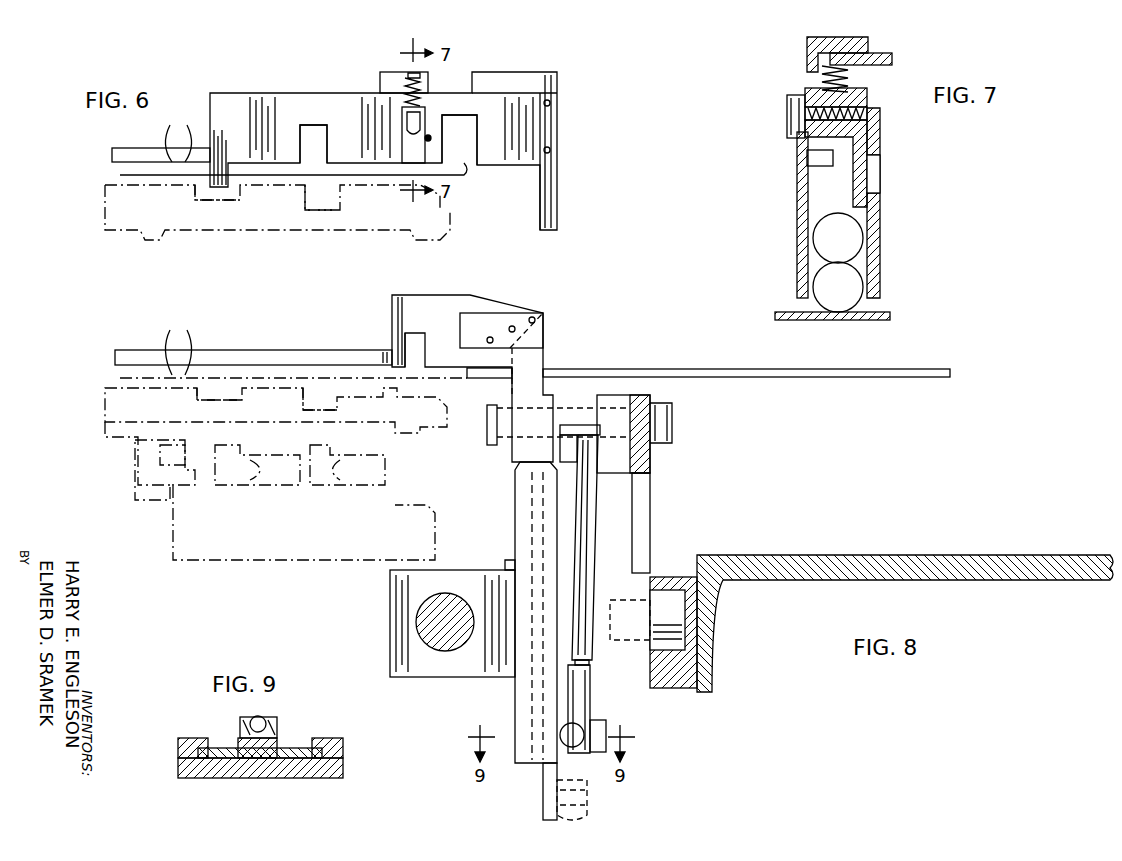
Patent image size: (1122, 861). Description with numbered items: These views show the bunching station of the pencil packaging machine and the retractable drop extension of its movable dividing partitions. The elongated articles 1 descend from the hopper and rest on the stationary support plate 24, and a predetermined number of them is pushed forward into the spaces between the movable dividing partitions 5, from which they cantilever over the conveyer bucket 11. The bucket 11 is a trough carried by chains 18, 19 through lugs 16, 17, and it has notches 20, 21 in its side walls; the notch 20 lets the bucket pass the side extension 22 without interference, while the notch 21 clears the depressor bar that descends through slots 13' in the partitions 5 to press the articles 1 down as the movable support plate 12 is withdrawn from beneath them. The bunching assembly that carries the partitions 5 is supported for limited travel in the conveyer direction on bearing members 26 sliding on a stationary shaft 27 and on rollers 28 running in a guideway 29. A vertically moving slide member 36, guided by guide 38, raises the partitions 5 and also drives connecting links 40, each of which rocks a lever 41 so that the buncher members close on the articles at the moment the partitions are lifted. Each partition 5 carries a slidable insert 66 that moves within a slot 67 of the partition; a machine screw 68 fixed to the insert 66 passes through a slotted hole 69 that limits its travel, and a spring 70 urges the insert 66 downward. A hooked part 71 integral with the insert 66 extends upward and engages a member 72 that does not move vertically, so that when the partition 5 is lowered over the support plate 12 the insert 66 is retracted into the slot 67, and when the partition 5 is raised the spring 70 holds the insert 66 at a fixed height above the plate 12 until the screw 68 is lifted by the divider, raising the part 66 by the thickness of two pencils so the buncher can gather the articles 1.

In FIG. 6, the elongated articles 1 is at (178, 134).
In FIG. 7, the elongated articles 1 is at (837, 302).
In FIG. 8, the elongated articles 1 is at (178, 344).
In FIG. 6, the movable dividing partitions 5 is at (281, 93).
In FIG. 7, the movable dividing partitions 5 is at (870, 146).
In FIG. 6, the conveyer bucket 11 is at (277, 233).
In FIG. 8, the conveyer bucket 11 is at (255, 474).
In FIG. 7, the movable support plate 12 is at (880, 312).
In FIG. 6, the slots 13' is at (293, 134).
In FIG. 8, the lug 16 is at (135, 490).
In FIG. 8, the lug 17 is at (400, 485).
In FIG. 8, the chain 18 is at (170, 490).
In FIG. 8, the chain 19 is at (360, 462).
In FIG. 6, the notch 20 is at (195, 196).
In FIG. 8, the notch 20 is at (197, 392).
In FIG. 6, the notch 21 is at (302, 199).
In FIG. 8, the notch 21 is at (340, 398).
In FIG. 6, the side extension 22 is at (224, 152).
In FIG. 8, the stationary support plate 24 is at (738, 378).
In FIG. 8, the bearing members 26 is at (400, 611).
In FIG. 8, the stationary shaft 27 is at (422, 634).
In FIG. 8, the rollers 28 is at (658, 628).
In FIG. 8, the guideway 29 is at (670, 682).
In FIG. 8, the slide member 36 is at (548, 776).
In FIG. 9, the slide member 36 is at (300, 765).
In FIG. 8, the guide 38 is at (525, 715).
In FIG. 9, the guide 38 is at (180, 748).
In FIG. 8, the connecting links 40 is at (597, 568).
In FIG. 9, the connecting links 40 is at (278, 722).
In FIG. 8, the lever 41 is at (632, 405).
In FIG. 6, the slidable insert 66 is at (402, 149).
In FIG. 7, the slidable insert 66 is at (880, 258).
In FIG. 6, the slot 67 is at (429, 134).
In FIG. 7, the slot 67 is at (874, 180).
In FIG. 7, the machine screw 68 is at (790, 125).
In FIG. 7, the slotted hole 69 is at (797, 143).
In FIG. 6, the spring 70 is at (402, 89).
In FIG. 7, the spring 70 is at (820, 88).
In FIG. 7, the hooked part 71 is at (808, 53).
In FIG. 7, the member 72 is at (888, 66).